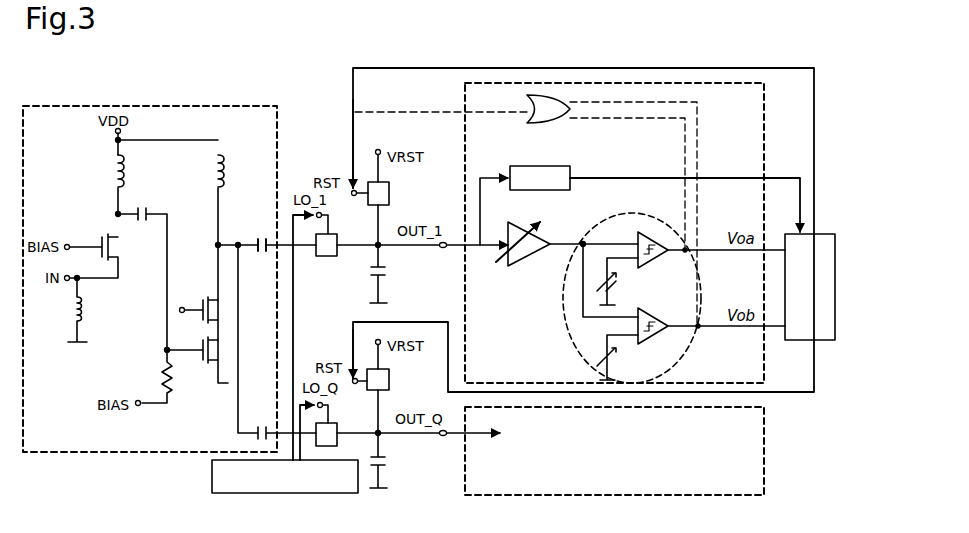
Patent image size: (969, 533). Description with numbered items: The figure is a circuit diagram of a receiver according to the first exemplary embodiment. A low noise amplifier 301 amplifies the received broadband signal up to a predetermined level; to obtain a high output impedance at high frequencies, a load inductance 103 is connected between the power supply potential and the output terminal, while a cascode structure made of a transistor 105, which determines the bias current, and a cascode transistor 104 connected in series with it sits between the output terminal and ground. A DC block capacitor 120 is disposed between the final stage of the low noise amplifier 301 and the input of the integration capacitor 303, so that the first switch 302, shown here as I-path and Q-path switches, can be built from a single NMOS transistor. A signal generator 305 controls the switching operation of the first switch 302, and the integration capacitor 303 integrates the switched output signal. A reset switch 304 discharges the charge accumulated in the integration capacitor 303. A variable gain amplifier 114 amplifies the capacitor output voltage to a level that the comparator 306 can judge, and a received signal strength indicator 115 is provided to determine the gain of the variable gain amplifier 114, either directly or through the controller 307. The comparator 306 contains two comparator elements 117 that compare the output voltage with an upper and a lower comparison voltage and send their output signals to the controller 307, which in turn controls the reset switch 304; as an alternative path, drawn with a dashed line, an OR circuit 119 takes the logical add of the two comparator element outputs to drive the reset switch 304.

The low noise amplifier 301 is at (140, 106).
The load inductance 103 is at (222, 156).
The cascode transistor 104 is at (206, 295).
The transistor 105 is at (208, 372).
The DC block capacitor 120 is at (256, 238).
The first switch 302 is at (334, 258).
The integration capacitor 303 is at (372, 284).
The reset switch 304 is at (390, 192).
The signal generator 305 is at (282, 494).
The comparator 306 is at (696, 346).
The controller 307 is at (786, 344).
The variable gain amplifier 114 is at (542, 230).
The received signal strength indicator 115 is at (571, 172).
The comparator elements 117 is at (644, 272).
The OR circuit 119 is at (526, 124).